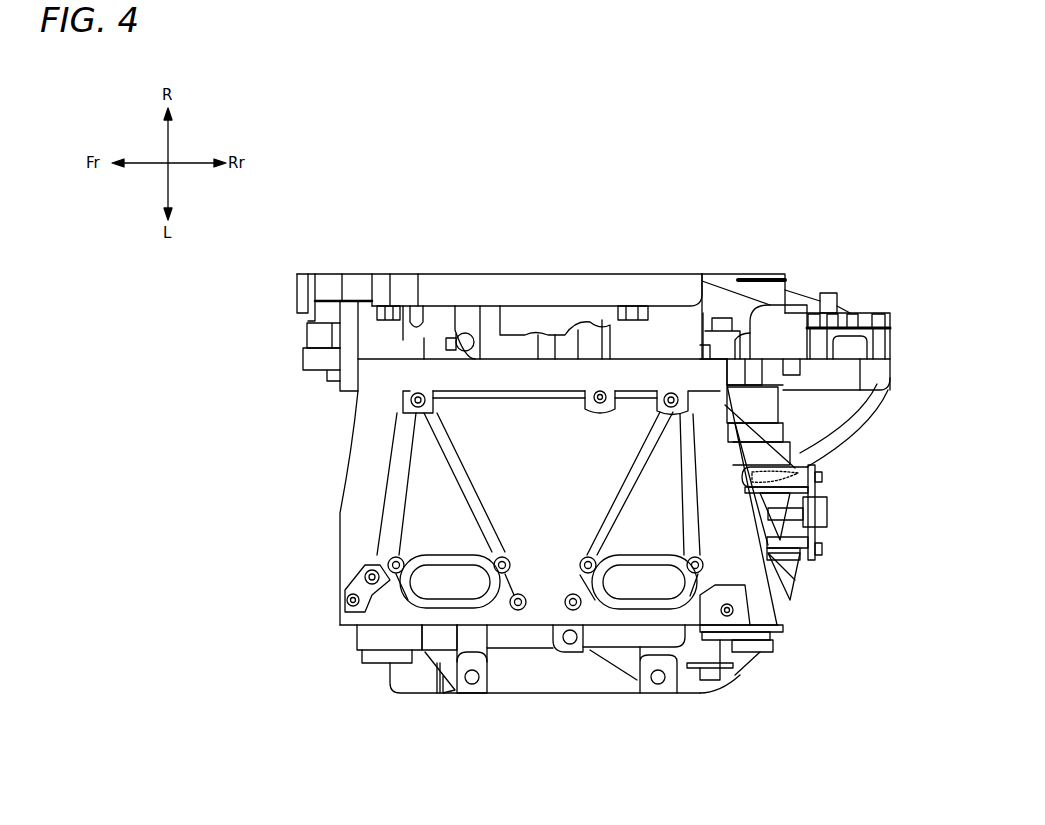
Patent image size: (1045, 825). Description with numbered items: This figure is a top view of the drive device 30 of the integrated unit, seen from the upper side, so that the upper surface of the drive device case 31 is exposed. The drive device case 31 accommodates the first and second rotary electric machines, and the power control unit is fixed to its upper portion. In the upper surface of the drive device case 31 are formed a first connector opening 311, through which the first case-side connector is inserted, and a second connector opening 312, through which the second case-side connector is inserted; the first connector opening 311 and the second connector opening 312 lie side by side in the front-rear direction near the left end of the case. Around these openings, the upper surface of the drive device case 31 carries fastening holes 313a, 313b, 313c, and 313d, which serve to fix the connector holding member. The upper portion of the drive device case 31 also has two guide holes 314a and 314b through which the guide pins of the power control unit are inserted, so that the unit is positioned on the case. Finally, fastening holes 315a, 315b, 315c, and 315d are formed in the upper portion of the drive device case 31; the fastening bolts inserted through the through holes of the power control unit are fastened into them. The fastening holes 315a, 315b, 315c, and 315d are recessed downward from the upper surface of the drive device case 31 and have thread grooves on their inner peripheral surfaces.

The drive device 30 is at (816, 221).
The drive device case 31 is at (525, 443).
The first connector opening 311 is at (450, 590).
The second connector opening 312 is at (660, 582).
The fastening hole 313a is at (393, 562).
The fastening hole 313b is at (518, 610).
The fastening hole 313c is at (576, 610).
The fastening hole 313d is at (700, 565).
The guide hole 314a is at (366, 578).
The guide hole 314b is at (601, 390).
The fastening hole 315a is at (347, 600).
The fastening hole 315b is at (400, 405).
The fastening hole 315c is at (692, 403).
The fastening hole 315d is at (735, 612).